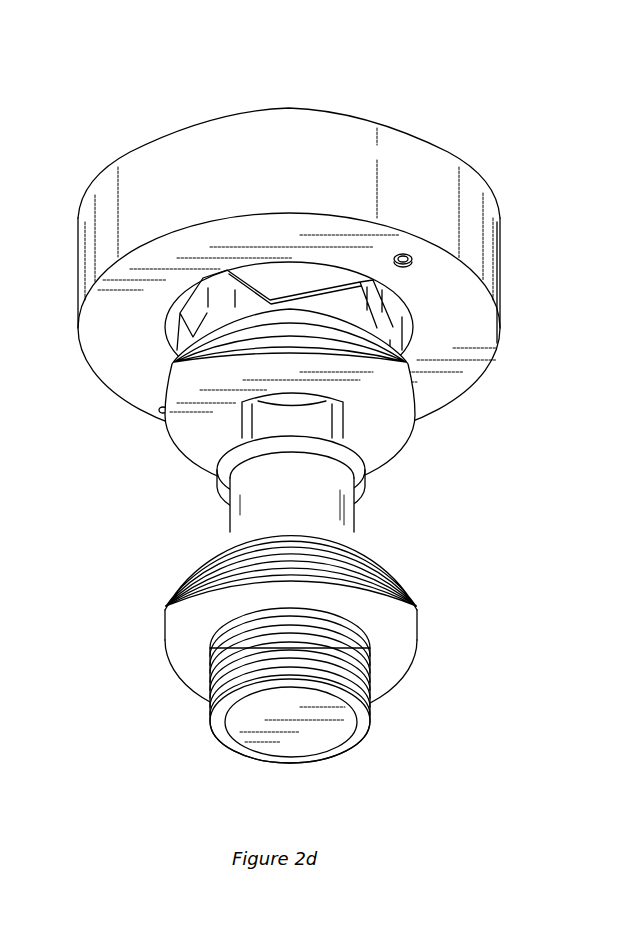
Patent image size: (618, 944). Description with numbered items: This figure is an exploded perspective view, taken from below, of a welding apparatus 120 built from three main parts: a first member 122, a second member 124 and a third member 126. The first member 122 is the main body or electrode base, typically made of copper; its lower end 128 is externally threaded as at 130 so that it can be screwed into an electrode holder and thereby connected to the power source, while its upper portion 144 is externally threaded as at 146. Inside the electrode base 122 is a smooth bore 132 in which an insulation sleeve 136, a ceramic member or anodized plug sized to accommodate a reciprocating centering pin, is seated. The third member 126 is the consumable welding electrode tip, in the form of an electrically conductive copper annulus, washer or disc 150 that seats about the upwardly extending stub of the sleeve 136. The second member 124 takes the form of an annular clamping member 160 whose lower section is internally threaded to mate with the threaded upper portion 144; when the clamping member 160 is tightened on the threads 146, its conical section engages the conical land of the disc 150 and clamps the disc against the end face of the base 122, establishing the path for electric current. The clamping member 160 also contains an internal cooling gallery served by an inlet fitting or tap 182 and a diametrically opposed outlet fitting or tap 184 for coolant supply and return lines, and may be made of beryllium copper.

The welding apparatus 120 is at (414, 103).
The first member 122 is at (417, 593).
The second member 124 is at (167, 130).
The third member 126 is at (383, 470).
The lower end 128 is at (213, 705).
The external threads 130 is at (228, 733).
The smooth bore 132 is at (282, 765).
The insulation sleeve 136 is at (248, 520).
The upper portion 144 is at (417, 650).
The external threads 146 is at (417, 612).
The copper disc 150 is at (383, 475).
The annular clamping member 160 is at (150, 141).
The inlet fitting 182 is at (163, 411).
The outlet fitting 184 is at (498, 343).